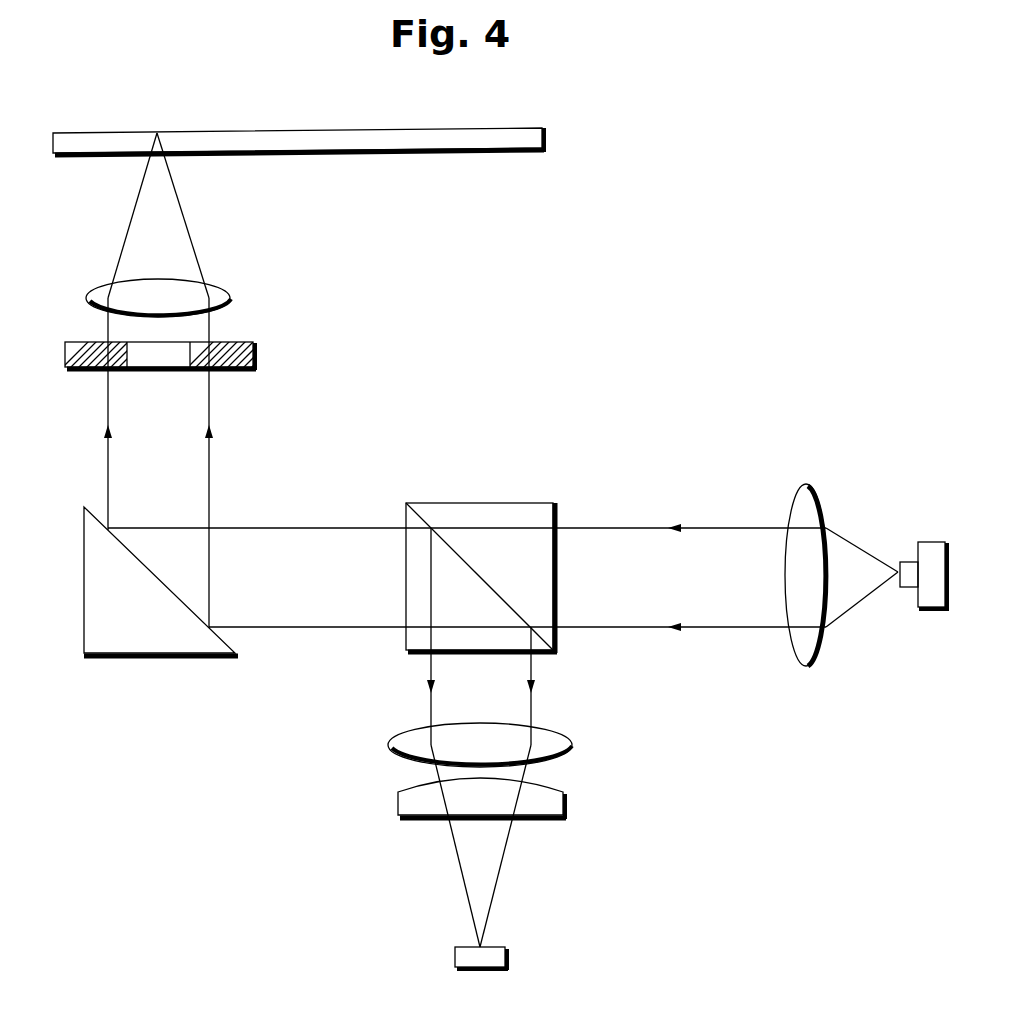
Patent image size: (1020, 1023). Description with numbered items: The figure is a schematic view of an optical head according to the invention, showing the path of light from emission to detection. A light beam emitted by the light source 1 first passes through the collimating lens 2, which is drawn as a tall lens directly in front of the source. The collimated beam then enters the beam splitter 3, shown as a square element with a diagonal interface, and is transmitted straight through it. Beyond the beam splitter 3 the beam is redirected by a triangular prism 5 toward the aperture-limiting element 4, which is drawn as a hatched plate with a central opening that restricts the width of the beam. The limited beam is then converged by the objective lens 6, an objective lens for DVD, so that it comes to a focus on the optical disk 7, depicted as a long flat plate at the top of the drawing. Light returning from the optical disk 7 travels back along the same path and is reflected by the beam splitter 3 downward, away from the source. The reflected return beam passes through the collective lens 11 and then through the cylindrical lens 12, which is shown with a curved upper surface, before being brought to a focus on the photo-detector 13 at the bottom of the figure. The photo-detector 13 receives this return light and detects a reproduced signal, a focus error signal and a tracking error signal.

The light source 1 is at (930, 610).
The collimating lens 2 is at (807, 655).
The beam splitter 3 is at (490, 510).
The aperture-limiting element 4 is at (256, 349).
The prism 5 is at (147, 643).
The objective lens 6 is at (218, 292).
The optical disk 7 is at (460, 144).
The collective lens 11 is at (560, 743).
The cylindrical lens 12 is at (553, 803).
The photo-detector 13 is at (500, 958).